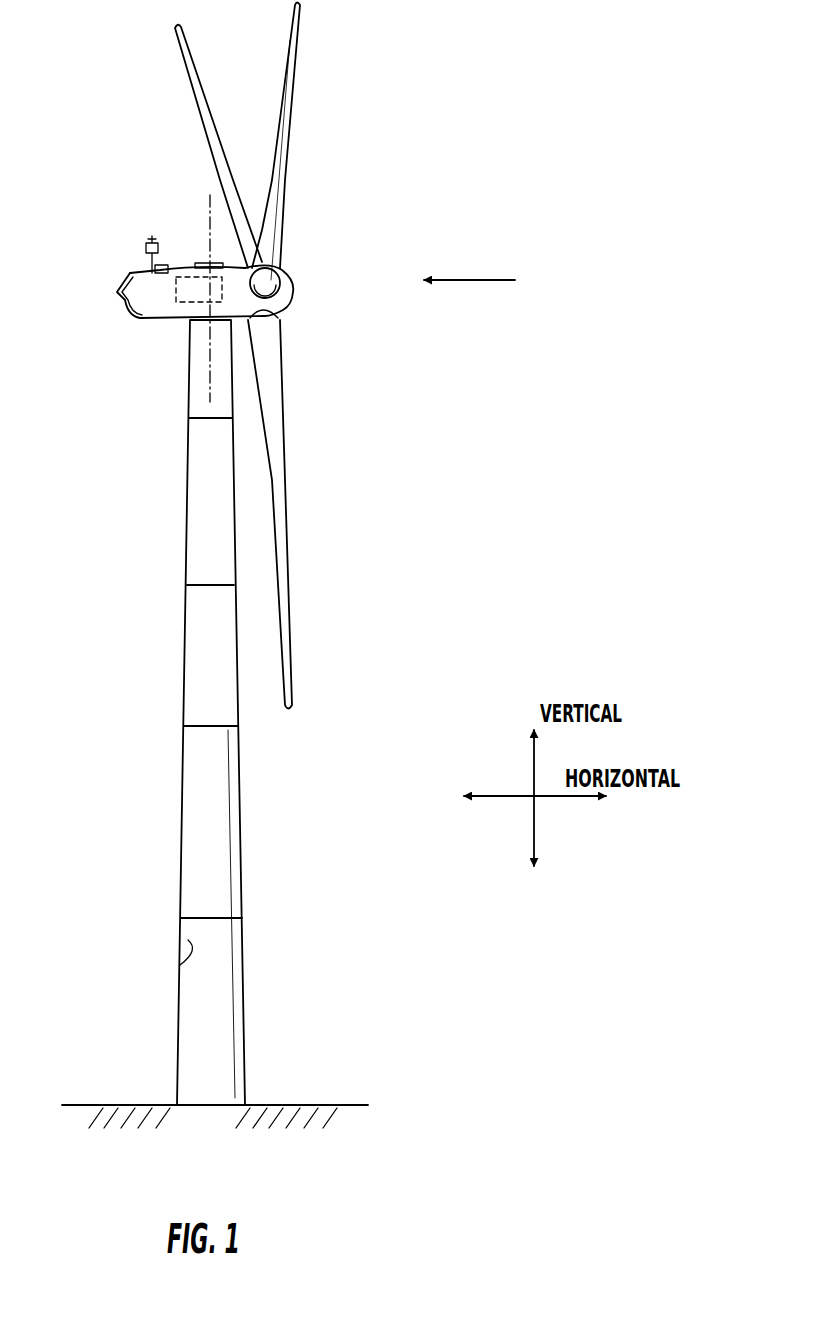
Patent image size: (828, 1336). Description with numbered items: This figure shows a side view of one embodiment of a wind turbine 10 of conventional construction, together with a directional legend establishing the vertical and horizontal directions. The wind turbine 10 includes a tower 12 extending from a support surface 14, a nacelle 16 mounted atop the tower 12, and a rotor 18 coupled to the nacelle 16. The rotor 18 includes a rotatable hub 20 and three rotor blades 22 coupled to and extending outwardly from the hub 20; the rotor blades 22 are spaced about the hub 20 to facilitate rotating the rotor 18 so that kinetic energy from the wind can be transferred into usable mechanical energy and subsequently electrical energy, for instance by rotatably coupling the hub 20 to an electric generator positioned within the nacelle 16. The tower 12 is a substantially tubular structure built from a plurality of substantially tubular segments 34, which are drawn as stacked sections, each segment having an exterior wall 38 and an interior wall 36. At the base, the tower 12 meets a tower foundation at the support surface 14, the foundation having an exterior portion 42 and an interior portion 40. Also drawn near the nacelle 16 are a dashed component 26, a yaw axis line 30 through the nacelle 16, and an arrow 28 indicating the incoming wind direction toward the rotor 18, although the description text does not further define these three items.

The wind turbine 10 is at (422, 74).
The tower 12 is at (198, 790).
The support surface 14 is at (135, 1105).
The nacelle 16 is at (157, 320).
The rotor 18 is at (306, 262).
The rotatable hub 20 is at (293, 296).
The rotor blade 22 is at (285, 73).
The turbine controller 26 is at (192, 263).
The wind direction 28 is at (488, 280).
The yaw axis 30 is at (208, 202).
The tubular segments 34 is at (210, 615).
The interior wall 36 is at (180, 965).
The exterior wall 38 is at (178, 877).
The interior portion 40 is at (205, 1108).
The exterior portion 42 is at (314, 1105).